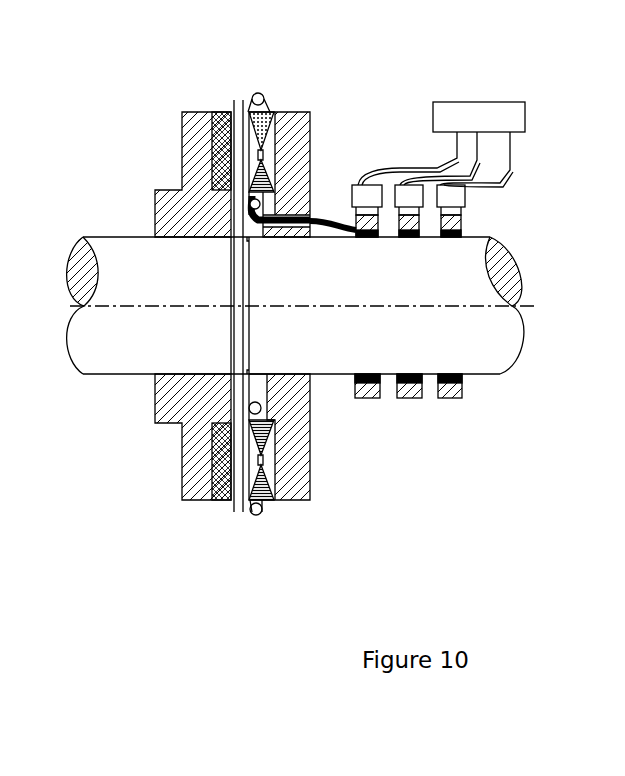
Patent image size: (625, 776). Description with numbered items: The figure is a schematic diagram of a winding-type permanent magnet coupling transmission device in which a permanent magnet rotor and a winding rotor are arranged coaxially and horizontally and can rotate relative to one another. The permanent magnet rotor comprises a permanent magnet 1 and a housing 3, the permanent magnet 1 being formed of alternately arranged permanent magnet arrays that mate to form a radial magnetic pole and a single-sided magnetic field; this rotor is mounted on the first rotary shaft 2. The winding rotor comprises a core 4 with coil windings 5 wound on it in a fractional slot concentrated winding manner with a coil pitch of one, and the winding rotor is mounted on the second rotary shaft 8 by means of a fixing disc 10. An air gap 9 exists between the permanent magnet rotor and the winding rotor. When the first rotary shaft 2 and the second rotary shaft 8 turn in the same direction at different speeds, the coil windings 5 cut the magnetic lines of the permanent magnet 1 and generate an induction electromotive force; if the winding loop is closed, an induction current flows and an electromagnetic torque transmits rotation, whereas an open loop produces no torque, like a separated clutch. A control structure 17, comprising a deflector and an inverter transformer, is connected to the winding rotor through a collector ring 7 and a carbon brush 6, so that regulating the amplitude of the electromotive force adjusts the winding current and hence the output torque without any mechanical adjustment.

The permanent magnet 1 is at (226, 463).
The first rotary shaft 2 is at (148, 256).
The housing 3 is at (200, 173).
The core 4 is at (240, 110).
The coil winding 5 is at (258, 94).
The carbon brush 6 is at (442, 193).
The collector ring 7 is at (368, 398).
The second rotary shaft 8 is at (320, 350).
The air gap 9 is at (240, 490).
The fixing disc 10 is at (297, 468).
The control structure 17 is at (479, 117).